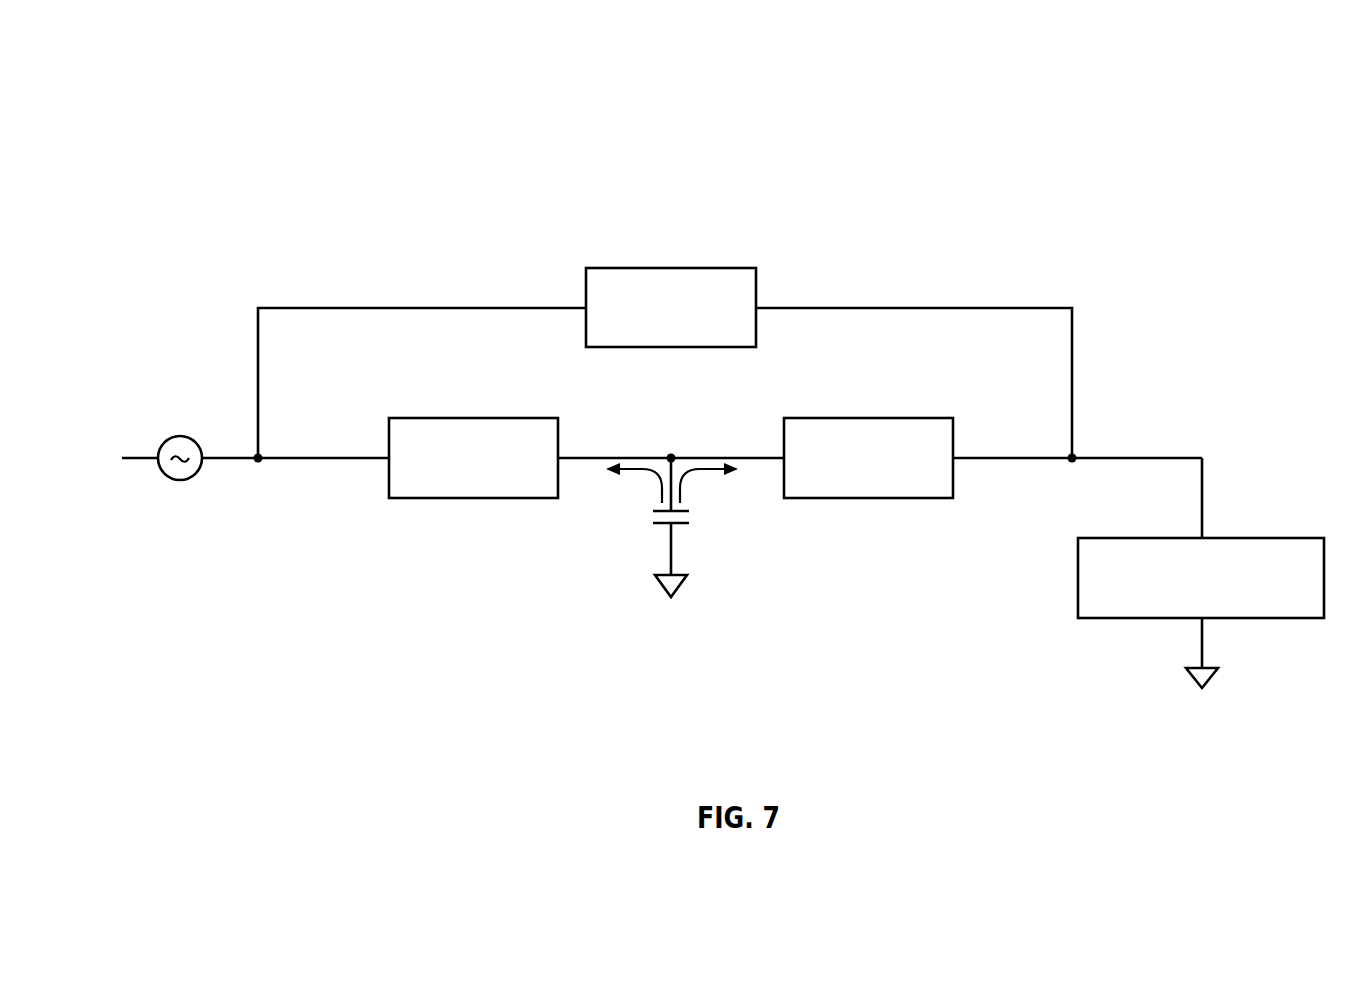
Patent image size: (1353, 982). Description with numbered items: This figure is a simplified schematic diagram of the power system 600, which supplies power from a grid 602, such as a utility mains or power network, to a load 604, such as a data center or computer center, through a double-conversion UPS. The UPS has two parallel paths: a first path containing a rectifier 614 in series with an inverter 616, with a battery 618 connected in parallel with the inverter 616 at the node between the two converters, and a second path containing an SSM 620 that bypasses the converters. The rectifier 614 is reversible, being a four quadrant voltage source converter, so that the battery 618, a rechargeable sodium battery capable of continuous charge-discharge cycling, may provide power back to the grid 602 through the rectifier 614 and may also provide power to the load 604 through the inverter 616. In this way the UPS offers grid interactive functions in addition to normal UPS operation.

The power system 600 is at (258, 136).
The grid 602 is at (183, 481).
The load 604 is at (1122, 538).
The rectifier 614 is at (465, 418).
The inverter 616 is at (860, 418).
The battery 618 is at (684, 525).
The SSM 620 is at (665, 268).